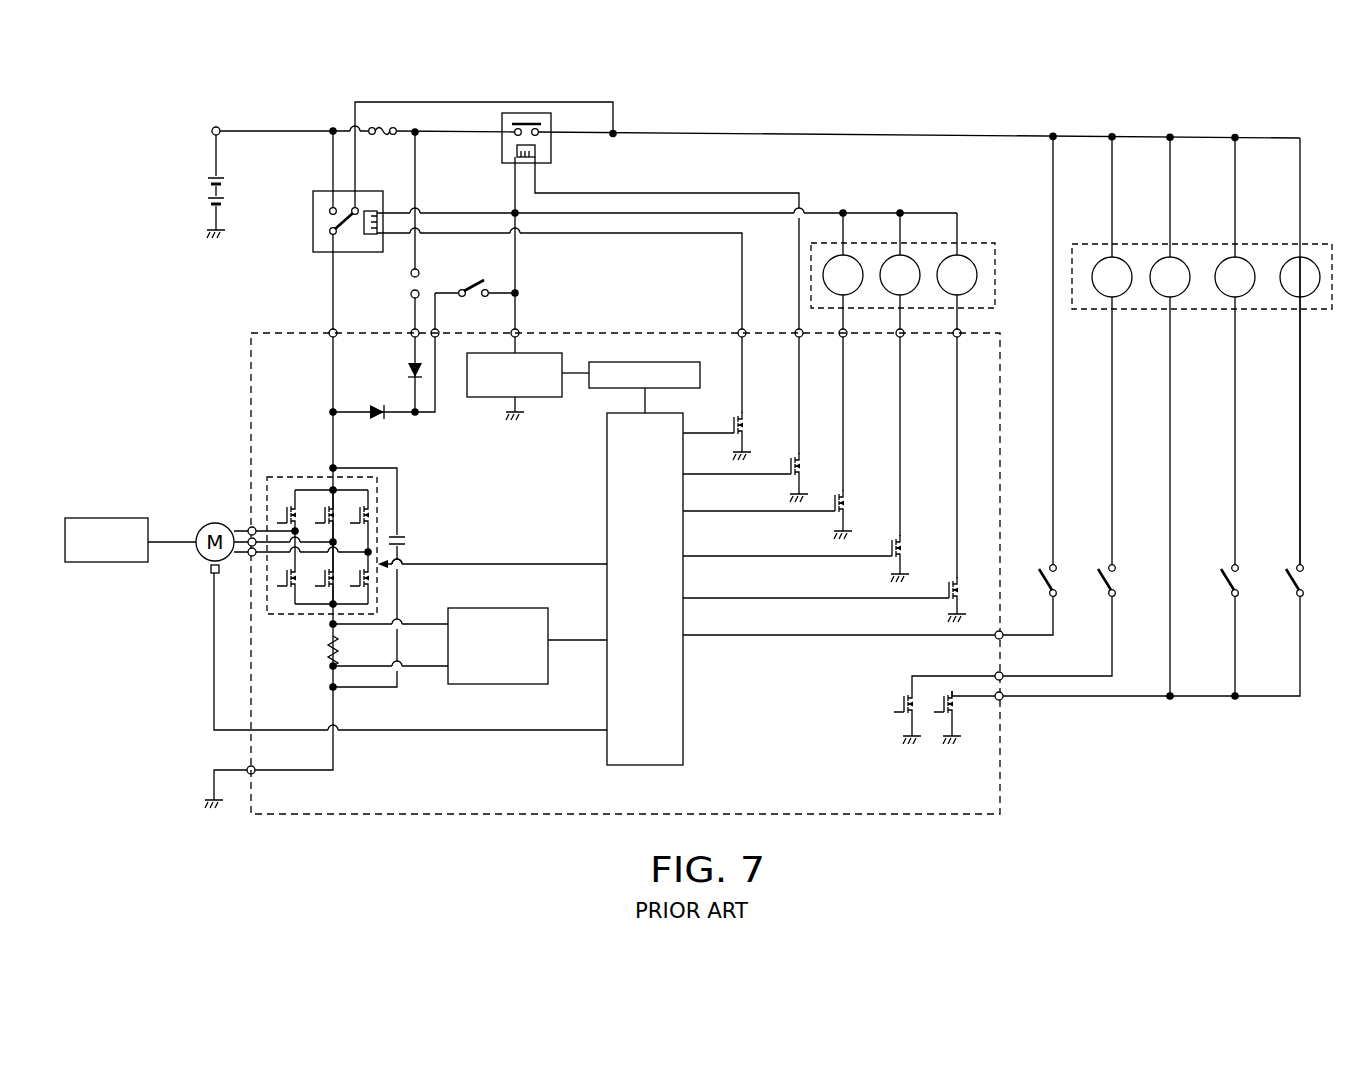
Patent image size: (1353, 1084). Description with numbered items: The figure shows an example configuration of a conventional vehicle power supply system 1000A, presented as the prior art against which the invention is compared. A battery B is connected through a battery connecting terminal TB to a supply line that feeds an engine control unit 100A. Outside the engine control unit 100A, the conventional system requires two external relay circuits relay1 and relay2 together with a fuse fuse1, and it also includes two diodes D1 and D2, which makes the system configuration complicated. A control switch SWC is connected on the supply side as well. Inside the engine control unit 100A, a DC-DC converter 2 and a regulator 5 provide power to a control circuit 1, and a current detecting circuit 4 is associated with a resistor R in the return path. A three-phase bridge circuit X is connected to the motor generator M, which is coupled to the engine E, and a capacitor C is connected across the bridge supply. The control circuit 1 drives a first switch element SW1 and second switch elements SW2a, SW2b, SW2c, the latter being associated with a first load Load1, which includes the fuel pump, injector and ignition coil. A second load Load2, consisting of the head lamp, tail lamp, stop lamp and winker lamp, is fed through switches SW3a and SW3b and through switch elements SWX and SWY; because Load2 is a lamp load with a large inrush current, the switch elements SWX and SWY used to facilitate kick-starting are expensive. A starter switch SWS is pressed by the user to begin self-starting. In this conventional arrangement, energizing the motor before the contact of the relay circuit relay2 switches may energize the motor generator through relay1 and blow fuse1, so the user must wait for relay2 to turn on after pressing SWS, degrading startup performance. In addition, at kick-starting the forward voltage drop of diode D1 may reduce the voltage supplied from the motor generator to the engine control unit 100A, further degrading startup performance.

The battery B is at (202, 160).
The battery connecting terminal TB is at (219, 126).
The fuse fuse1 is at (376, 144).
The relay circuit relay1 is at (552, 152).
The relay circuit relay2 is at (355, 254).
The control switch SWC is at (475, 281).
The diode D1 is at (407, 372).
The diode D2 is at (380, 421).
The DC-DC converter 2 is at (545, 352).
The regulator 5 is at (643, 362).
The control circuit 1 is at (683, 700).
The current detecting circuit 4 is at (550, 610).
The three-phase bridge circuit X is at (298, 477).
The capacitor C is at (403, 535).
The resistor R is at (327, 651).
The engine E is at (108, 518).
The first switch element SW1 is at (719, 425).
The second switch element SW2a is at (838, 492).
The second switch element SW2b is at (896, 533).
The second switch element SW2c is at (956, 577).
The starter switch SWS is at (1046, 582).
The switch SW3a is at (1105, 582).
The switch SW3b is at (1279, 592).
The switch element SWX is at (903, 722).
The switch element SWY is at (943, 722).
The first load Load1 is at (973, 243).
The second load Load2 is at (1159, 244).
The engine control unit 100A is at (1000, 740).
The vehicle power supply system 1000A is at (592, 858).